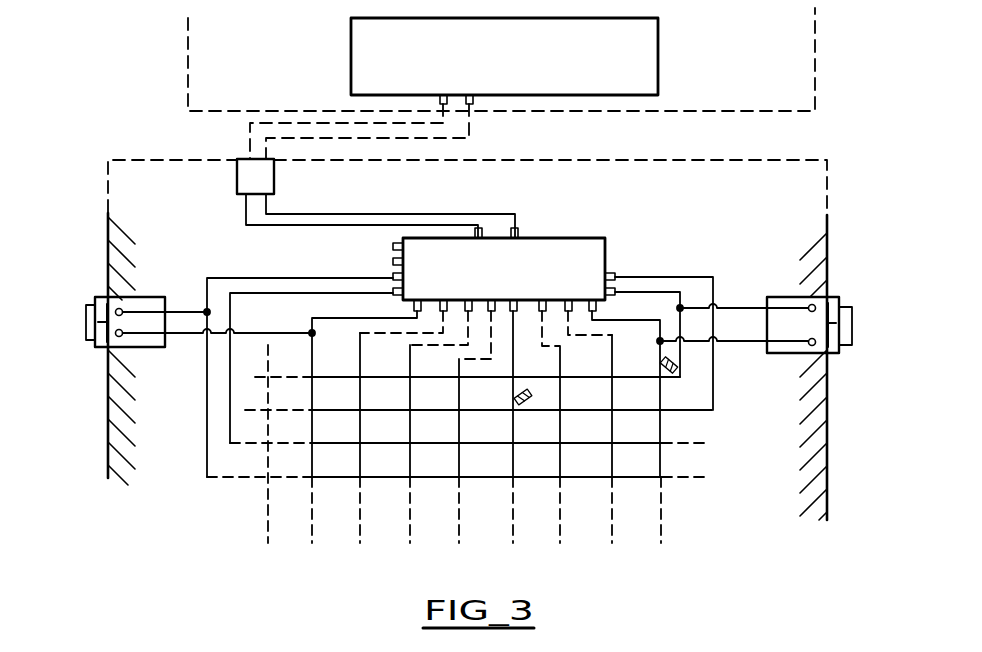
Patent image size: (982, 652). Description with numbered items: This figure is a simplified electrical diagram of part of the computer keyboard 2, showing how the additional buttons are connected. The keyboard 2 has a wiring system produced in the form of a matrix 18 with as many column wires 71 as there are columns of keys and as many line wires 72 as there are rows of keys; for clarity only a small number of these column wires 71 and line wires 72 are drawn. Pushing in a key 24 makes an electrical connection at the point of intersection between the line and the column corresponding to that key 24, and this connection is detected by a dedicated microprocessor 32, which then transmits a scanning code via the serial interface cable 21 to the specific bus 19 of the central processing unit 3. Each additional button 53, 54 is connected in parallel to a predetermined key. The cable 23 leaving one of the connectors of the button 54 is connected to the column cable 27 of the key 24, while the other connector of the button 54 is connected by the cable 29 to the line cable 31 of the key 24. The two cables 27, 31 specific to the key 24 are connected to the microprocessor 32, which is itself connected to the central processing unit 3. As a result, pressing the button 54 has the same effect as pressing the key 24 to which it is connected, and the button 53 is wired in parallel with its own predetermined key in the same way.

The keyboard 2 is at (828, 476).
The central processing unit 3 is at (815, 61).
The matrix 18 is at (543, 458).
The specific bus 19 is at (658, 58).
The serial interface cable 21 is at (457, 128).
The cable 23 is at (747, 345).
The key 24 is at (664, 378).
The column cable 27 is at (637, 322).
The cable 29 is at (740, 311).
The line cable 31 is at (693, 292).
The microprocessor 32 is at (567, 252).
The additional button 53 is at (82, 318).
The additional button 54 is at (853, 319).
The column wires 71 is at (360, 490).
The line wires 72 is at (218, 482).